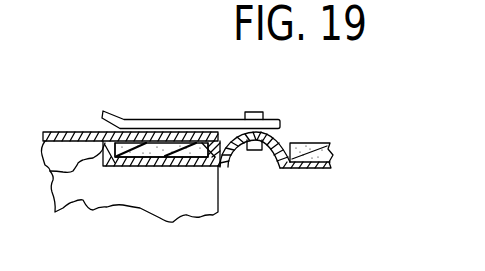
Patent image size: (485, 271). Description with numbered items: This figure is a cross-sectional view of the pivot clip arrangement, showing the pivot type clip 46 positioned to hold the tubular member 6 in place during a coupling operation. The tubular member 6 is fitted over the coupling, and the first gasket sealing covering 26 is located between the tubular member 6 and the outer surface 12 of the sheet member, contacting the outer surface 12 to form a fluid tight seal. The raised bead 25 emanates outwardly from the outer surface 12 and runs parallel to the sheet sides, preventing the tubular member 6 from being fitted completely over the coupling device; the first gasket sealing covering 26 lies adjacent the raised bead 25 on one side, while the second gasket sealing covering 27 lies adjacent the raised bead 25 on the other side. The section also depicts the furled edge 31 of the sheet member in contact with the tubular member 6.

The tubular member 6 is at (70, 131).
The pivot type clip 46 is at (167, 119).
The raised bead 25 is at (288, 134).
The first gasket sealing covering 26 is at (305, 142).
The second gasket sealing covering 27 is at (185, 167).
The outer surface 12 is at (137, 167).
The first sheet side 31 is at (53, 178).